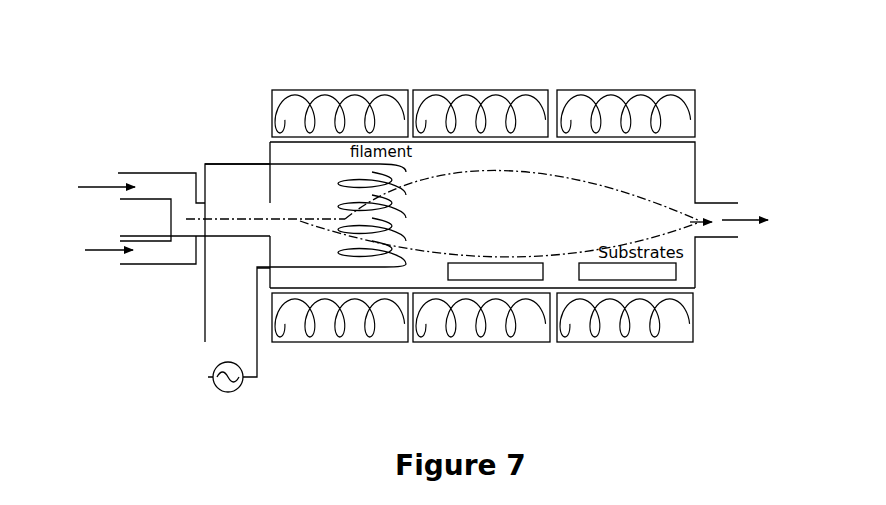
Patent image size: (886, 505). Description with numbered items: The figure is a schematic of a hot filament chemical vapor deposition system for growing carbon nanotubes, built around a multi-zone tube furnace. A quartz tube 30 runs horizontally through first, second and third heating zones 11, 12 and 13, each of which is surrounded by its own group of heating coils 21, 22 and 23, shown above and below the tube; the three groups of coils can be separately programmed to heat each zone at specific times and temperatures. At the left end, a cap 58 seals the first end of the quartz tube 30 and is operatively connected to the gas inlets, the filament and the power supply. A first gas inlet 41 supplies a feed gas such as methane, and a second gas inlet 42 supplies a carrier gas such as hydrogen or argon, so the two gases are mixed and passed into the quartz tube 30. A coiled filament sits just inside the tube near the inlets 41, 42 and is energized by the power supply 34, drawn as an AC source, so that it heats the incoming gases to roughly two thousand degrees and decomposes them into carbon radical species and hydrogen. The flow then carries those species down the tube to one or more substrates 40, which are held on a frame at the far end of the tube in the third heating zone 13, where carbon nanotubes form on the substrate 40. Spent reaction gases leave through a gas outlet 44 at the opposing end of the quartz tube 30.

The quartz tube 30 is at (765, 108).
The cap 58 is at (290, 107).
The second gas inlet 42 is at (165, 122).
The first gas inlet 41 is at (157, 226).
The power supply 34 is at (228, 300).
The gas outlet 44 is at (768, 205).
The substrate 40 is at (580, 242).
The first heating zone 11 is at (340, 338).
The second heating zone 12 is at (481, 338).
The third heating zone 13 is at (625, 338).
The heating coils 21 is at (422, 285).
The heating coils 22 is at (593, 322).
The heating coils 23 is at (733, 298).